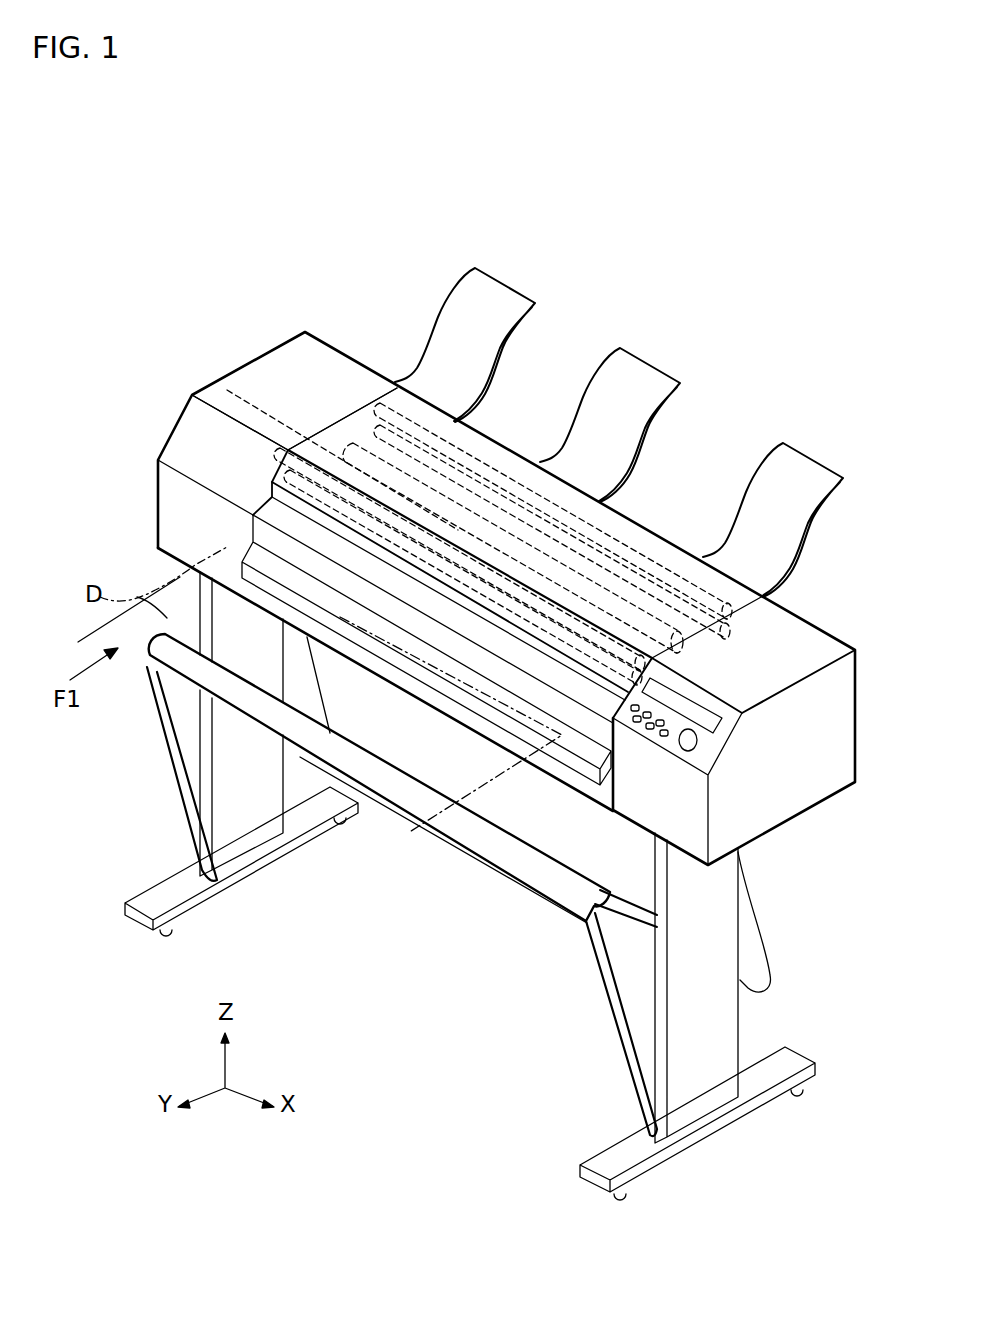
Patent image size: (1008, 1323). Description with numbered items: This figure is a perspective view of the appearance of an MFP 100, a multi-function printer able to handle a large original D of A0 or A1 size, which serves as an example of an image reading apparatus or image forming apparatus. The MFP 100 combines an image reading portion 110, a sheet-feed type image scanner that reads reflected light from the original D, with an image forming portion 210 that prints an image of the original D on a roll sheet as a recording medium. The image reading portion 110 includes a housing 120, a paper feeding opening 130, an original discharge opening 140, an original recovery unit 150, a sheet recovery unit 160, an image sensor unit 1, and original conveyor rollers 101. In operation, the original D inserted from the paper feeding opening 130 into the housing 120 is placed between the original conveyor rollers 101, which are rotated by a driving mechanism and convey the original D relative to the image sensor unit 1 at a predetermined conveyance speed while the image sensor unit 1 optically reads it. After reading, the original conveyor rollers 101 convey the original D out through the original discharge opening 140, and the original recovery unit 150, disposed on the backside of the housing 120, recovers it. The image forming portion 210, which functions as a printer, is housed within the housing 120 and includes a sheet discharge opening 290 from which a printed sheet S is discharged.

The MFP 100 is at (568, 315).
The image reading portion 110 is at (143, 390).
The image forming portion 210 is at (143, 463).
The housing 120 is at (270, 350).
The paper feeding opening 130 is at (292, 519).
The original conveyor rollers 101 is at (243, 455).
The image sensor unit 1 is at (493, 530).
The original recovery unit 150 is at (645, 392).
The original discharge opening 140 is at (652, 529).
The sheet recovery unit 160 is at (633, 875).
The sheet discharge opening 290 is at (278, 600).